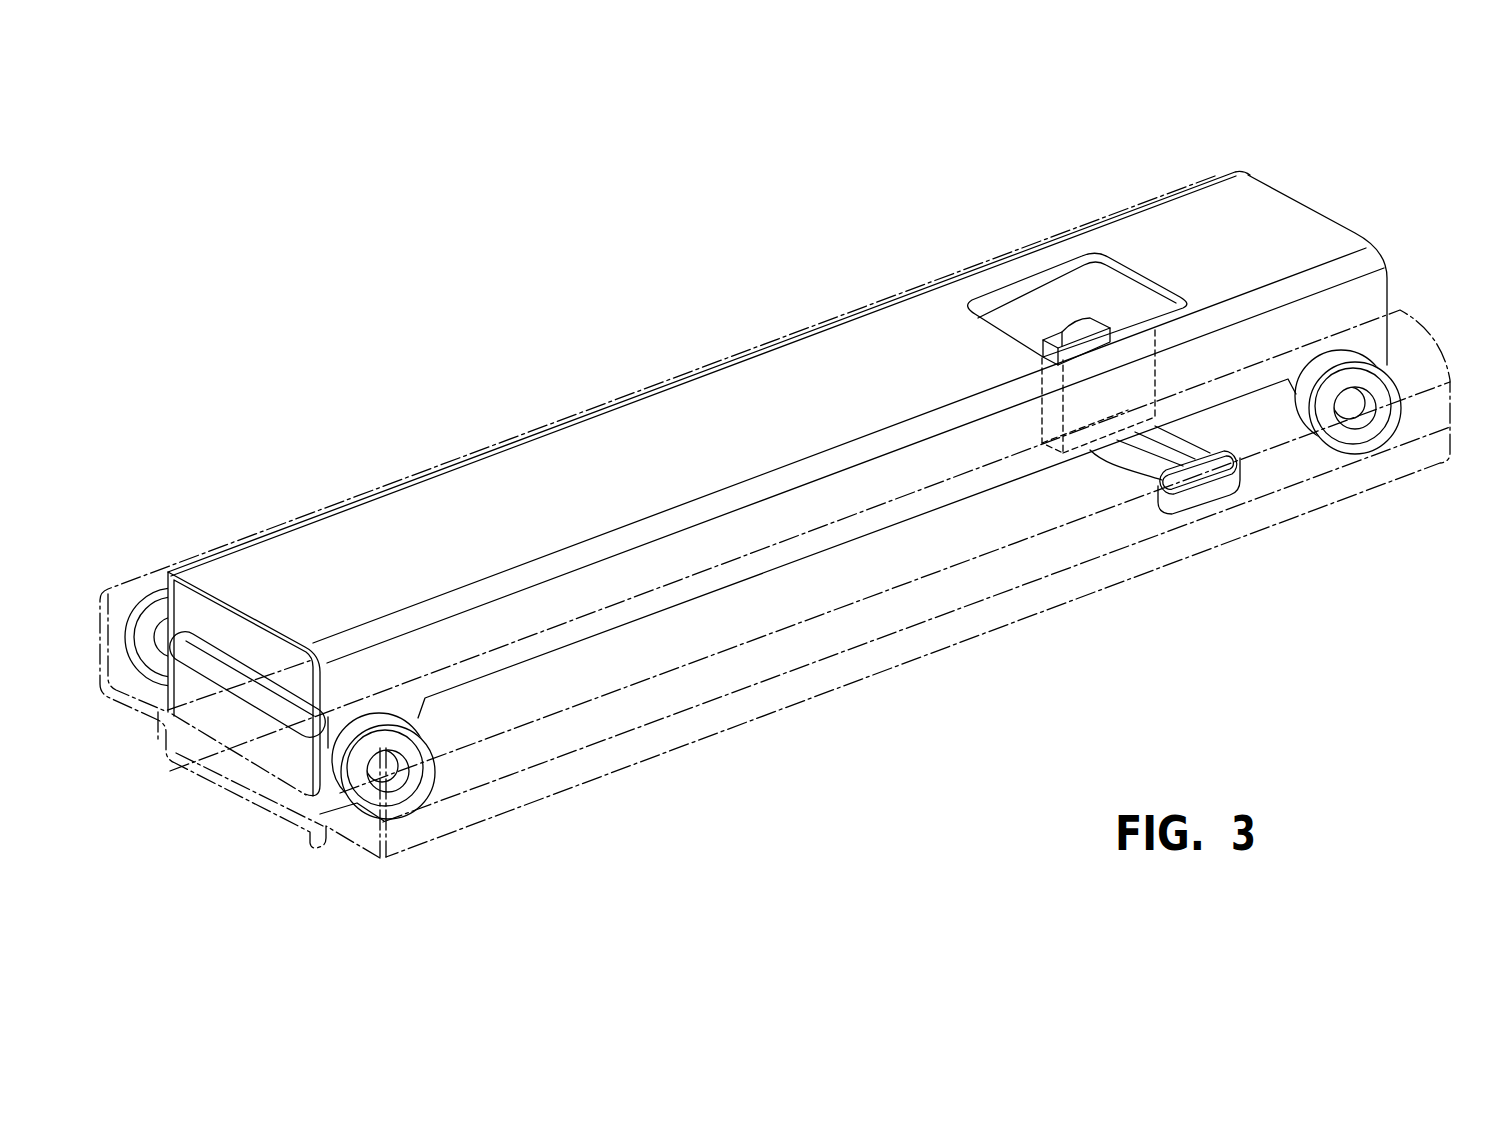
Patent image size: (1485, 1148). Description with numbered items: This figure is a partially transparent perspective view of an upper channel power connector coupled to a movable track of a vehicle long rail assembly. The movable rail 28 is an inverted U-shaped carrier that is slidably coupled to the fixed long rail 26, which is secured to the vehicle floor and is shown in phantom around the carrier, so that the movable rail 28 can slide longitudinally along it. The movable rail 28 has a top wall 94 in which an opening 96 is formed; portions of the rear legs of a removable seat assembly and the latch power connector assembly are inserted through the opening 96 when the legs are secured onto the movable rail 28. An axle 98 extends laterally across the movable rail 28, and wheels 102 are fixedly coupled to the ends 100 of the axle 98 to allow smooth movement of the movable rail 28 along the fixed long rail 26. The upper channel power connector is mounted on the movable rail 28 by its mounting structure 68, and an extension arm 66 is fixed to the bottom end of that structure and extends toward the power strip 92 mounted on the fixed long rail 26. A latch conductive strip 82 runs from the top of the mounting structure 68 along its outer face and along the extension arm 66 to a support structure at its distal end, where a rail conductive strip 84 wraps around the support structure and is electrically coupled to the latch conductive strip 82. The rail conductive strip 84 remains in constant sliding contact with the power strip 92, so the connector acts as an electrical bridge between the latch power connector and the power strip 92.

The movable rail 28 is at (1277, 179).
The fixed long rail 26 is at (287, 843).
The power strip 92 is at (379, 826).
The top wall 94 is at (858, 385).
The opening 96 is at (1143, 293).
The latch conductive strip 82 is at (1080, 330).
The mounting structure 68 is at (1050, 412).
The extension arm 66 is at (1135, 470).
The rail conductive strip 84 is at (1213, 493).
The axle 98 is at (208, 690).
The ends of axle 100 is at (402, 793).
The wheels 102 is at (398, 805).